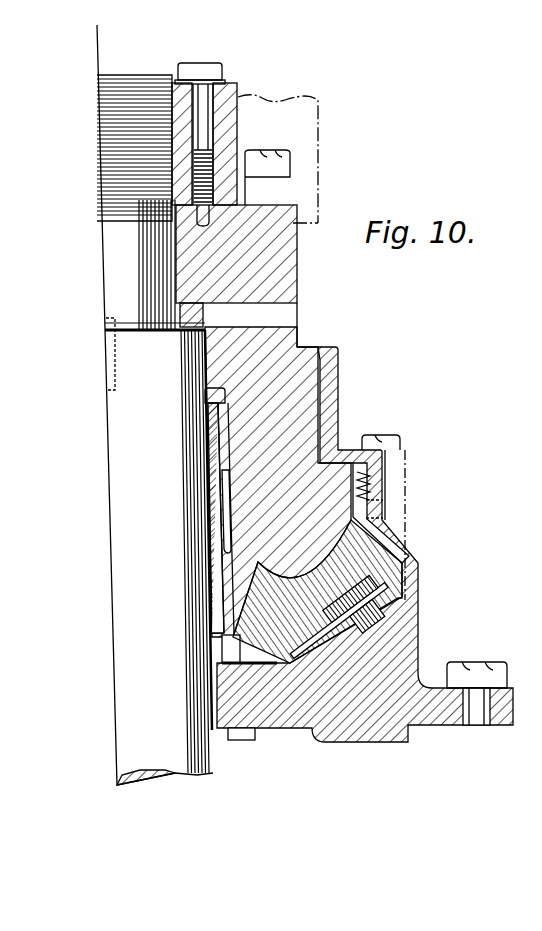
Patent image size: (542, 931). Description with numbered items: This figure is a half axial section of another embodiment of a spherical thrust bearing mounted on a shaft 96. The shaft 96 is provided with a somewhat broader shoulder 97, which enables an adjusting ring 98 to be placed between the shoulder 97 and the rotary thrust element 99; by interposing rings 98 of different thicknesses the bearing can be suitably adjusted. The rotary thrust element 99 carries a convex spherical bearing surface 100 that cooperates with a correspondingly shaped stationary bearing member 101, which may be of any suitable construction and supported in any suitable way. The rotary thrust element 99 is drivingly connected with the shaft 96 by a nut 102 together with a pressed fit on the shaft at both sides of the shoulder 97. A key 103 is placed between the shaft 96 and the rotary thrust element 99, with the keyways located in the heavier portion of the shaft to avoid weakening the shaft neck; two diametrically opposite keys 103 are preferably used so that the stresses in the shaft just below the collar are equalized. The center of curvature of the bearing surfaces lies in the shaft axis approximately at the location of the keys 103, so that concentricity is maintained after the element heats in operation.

The shaft 96 is at (122, 500).
The shoulder 97 is at (190, 334).
The adjusting ring 98 is at (182, 312).
The rotary thrust element 99 is at (293, 343).
The convex spherical bearing surface 100 is at (262, 612).
The stationary bearing member 101 is at (385, 570).
The nut 102 is at (227, 102).
The key 103 is at (308, 585).